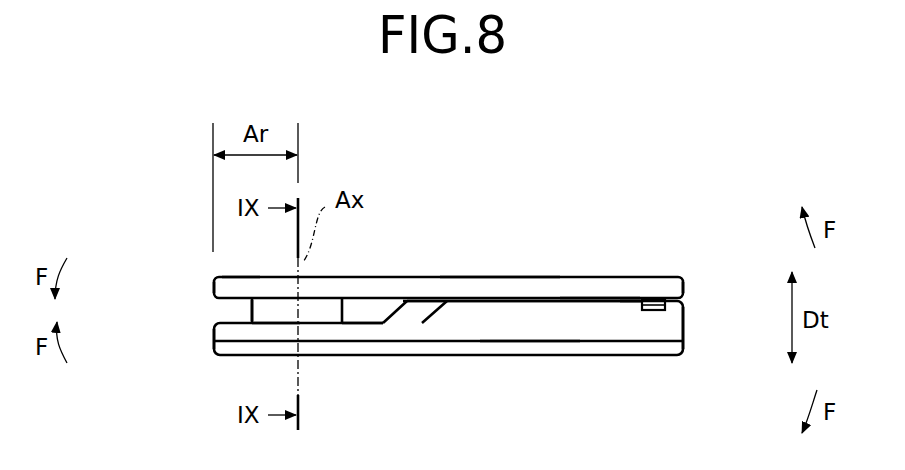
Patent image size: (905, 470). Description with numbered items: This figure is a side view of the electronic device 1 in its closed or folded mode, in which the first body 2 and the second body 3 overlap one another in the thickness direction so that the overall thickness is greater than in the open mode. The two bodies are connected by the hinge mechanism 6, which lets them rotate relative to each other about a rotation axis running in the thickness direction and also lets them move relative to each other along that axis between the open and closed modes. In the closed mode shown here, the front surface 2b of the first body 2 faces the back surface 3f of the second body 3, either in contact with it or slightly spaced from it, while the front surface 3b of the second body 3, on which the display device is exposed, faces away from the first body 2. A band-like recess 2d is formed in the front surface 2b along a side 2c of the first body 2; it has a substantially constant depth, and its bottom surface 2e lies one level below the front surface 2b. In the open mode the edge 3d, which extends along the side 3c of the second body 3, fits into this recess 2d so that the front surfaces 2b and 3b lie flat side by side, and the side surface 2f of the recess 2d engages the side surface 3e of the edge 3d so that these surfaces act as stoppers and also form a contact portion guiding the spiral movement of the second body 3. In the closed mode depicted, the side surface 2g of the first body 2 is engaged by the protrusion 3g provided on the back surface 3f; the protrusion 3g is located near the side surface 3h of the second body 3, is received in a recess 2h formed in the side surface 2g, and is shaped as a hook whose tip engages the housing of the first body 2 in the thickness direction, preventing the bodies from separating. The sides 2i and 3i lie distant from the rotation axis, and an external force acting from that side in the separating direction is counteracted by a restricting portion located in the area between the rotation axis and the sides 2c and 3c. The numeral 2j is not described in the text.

The electronic device 1 is at (572, 198).
The first body 2 is at (687, 348).
The front surface of the first body 2b is at (565, 299).
The side of the first body 2c is at (213, 333).
The recess 2d is at (270, 319).
The bottom surface of the recess 2e is at (358, 319).
The side surface of the recess 2f is at (427, 364).
The side surface of the first body 2g is at (530, 327).
The recess in the side surface 2h is at (636, 300).
The side of the first body distant from the rotation axis 2i is at (685, 321).
The protrusion 2j is at (412, 312).
The second body 3 is at (685, 269).
The front surface of the second body 3b is at (522, 277).
The side of the second body 3c is at (159, 277).
The edge of the second body 3d is at (218, 279).
The side surface of the edge 3e is at (212, 290).
The back surface of the second body 3f is at (603, 300).
The protrusion 3g is at (658, 299).
The side surface of the second body 3h is at (473, 283).
The side of the second body distant from the rotation axis 3i is at (685, 288).
The hinge mechanism 6 is at (252, 316).